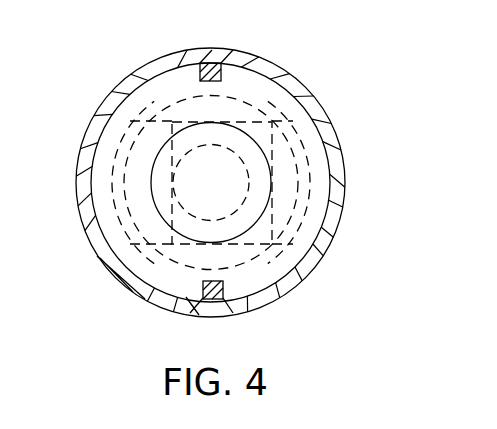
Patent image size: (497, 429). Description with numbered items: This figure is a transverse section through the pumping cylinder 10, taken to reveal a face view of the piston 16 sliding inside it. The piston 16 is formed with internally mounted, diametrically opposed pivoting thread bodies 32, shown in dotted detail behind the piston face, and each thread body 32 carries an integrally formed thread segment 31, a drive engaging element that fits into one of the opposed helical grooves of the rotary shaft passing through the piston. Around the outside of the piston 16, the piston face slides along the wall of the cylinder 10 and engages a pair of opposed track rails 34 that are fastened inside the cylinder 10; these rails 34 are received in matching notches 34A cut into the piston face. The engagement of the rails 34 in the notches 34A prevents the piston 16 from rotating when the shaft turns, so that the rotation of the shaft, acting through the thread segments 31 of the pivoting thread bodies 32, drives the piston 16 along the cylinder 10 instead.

The cylinder 10 is at (123, 77).
The piston 16 is at (271, 89).
The thread segments 31 is at (96, 256).
The pivoting thread bodies 32 is at (118, 144).
The track rails 34 is at (214, 63).
The notches 34A is at (231, 62).